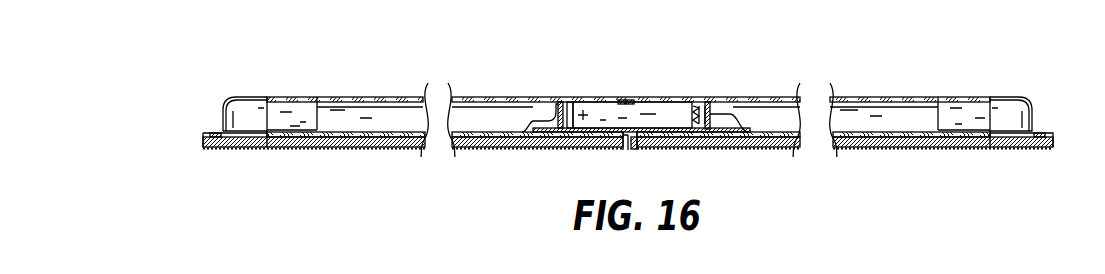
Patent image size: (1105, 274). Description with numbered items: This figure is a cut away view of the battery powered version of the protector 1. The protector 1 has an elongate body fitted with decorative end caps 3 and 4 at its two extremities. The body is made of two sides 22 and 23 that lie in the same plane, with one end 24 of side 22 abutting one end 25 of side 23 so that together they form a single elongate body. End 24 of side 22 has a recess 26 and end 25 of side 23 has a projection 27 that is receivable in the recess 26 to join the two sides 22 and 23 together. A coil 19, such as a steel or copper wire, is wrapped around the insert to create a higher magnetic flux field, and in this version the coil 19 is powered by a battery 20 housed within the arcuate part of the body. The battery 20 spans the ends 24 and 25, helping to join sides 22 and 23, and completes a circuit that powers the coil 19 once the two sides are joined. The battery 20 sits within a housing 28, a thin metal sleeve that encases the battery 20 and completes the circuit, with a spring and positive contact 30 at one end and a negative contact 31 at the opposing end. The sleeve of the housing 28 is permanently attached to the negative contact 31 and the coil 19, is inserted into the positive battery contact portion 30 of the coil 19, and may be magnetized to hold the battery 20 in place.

The protector 1 is at (315, 190).
The decorative end cap 3 is at (246, 110).
The decorative end cap 4 is at (1012, 110).
The coil 19 is at (483, 137).
The battery 20 is at (667, 110).
The side 22 is at (393, 117).
The side 23 is at (892, 117).
The end 24 is at (627, 100).
The end 25 is at (630, 100).
The recess 26 is at (618, 150).
The projection 27 is at (635, 150).
The housing 28 is at (583, 100).
The spring and positive contact 30 is at (556, 108).
The negative contact 31 is at (723, 110).